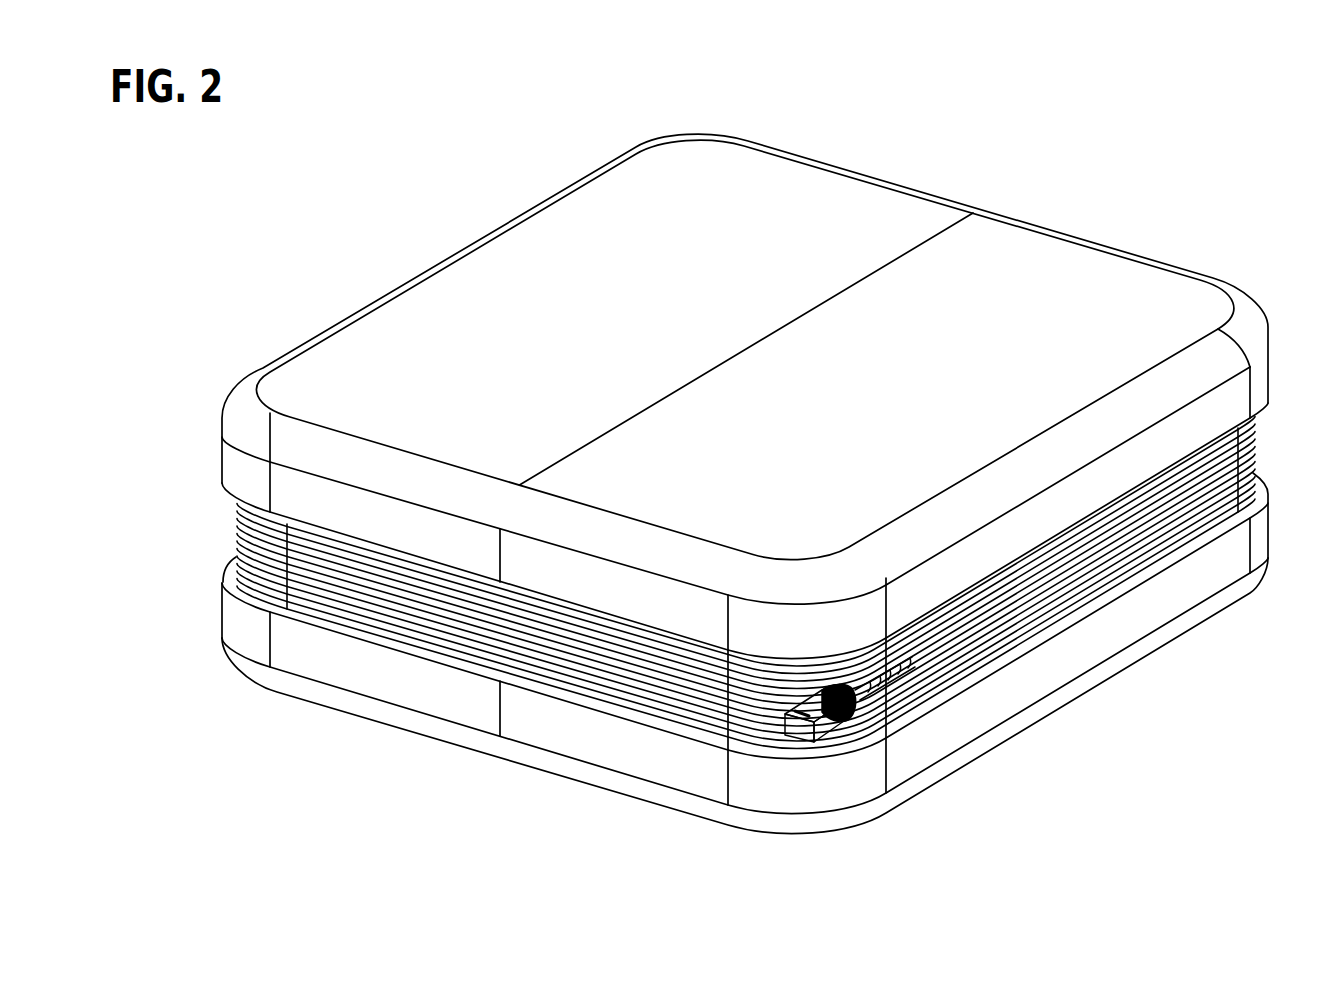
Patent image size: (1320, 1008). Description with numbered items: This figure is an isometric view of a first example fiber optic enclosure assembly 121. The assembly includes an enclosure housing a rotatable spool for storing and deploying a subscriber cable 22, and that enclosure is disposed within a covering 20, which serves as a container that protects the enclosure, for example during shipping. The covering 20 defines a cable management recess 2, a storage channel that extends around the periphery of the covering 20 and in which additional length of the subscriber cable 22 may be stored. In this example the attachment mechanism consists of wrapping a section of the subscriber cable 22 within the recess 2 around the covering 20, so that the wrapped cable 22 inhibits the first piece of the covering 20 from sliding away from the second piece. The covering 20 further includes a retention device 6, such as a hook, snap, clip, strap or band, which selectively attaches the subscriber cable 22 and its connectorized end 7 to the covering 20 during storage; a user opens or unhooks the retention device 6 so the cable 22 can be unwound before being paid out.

The fiber optic enclosure assembly 121 is at (441, 199).
The covering 20 is at (780, 221).
The cable management recess 2 is at (1150, 575).
The subscriber cable 22 is at (372, 595).
The retention device 6 is at (868, 686).
The end 7 is at (838, 722).